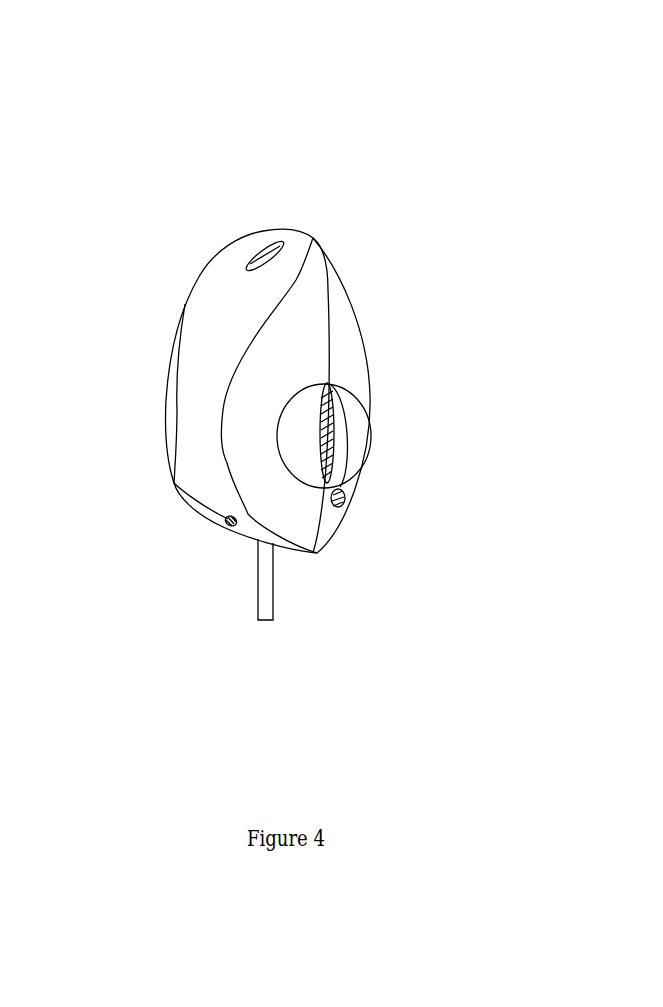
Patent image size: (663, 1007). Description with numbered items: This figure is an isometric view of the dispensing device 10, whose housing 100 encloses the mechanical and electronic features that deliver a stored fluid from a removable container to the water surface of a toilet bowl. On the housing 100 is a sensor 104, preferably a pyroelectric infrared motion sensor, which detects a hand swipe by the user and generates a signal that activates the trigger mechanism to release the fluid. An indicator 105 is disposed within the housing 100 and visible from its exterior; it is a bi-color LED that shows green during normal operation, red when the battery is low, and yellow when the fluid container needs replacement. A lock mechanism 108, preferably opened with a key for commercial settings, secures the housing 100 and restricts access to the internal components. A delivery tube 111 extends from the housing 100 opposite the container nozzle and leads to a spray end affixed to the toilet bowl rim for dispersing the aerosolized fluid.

The device 10 is at (139, 154).
The housing 100 is at (198, 402).
The sensor 104 is at (228, 525).
The indicator 105 is at (275, 241).
The lock mechanism 108 is at (346, 499).
The delivery tube 111 is at (273, 590).